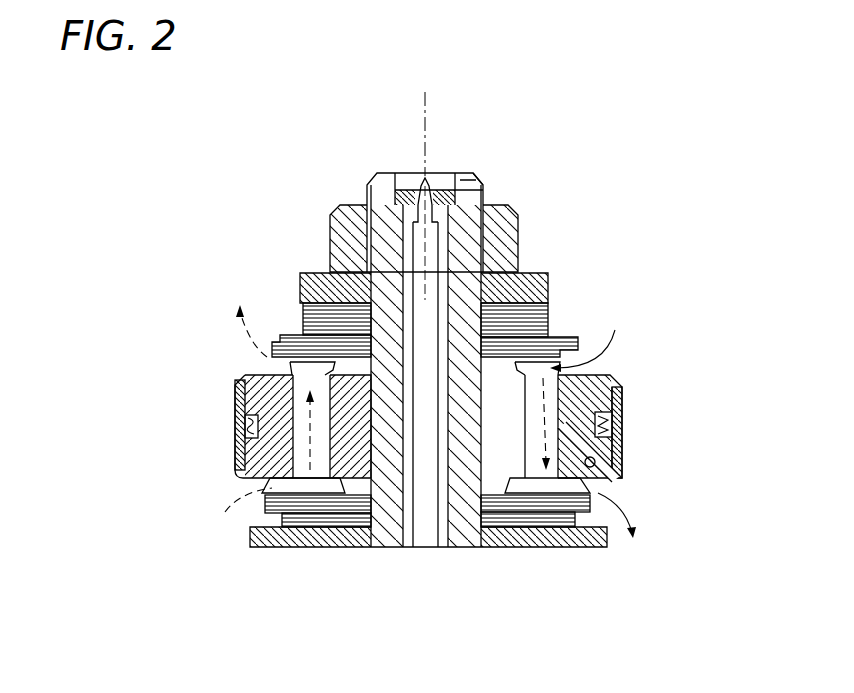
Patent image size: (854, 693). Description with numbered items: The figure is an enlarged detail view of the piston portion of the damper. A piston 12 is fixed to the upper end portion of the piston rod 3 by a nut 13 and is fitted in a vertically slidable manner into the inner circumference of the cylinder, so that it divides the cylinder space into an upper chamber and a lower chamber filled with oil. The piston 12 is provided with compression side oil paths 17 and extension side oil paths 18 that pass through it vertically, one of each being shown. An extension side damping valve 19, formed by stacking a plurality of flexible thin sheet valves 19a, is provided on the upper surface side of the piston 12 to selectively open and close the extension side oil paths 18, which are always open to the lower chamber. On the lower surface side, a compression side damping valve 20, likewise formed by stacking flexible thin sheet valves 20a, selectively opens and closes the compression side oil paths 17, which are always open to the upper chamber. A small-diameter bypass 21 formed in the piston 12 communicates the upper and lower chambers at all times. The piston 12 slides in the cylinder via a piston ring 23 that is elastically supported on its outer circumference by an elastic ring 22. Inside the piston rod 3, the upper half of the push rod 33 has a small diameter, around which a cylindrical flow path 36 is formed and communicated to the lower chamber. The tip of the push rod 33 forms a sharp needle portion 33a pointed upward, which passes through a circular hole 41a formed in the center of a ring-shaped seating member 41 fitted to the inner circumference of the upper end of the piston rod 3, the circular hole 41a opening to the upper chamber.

The piston rod 3 is at (362, 533).
The piston 12 is at (240, 376).
The nut 13 is at (328, 221).
The compression side oil path 17 is at (550, 410).
The extension side oil path 18 is at (237, 469).
The extension side damping valve 19 is at (297, 338).
The sheet valve 19a is at (558, 342).
The compression side damping valve 20 is at (583, 548).
The sheet valve 20a is at (262, 528).
The bypass 21 is at (612, 463).
The elastic ring 22 is at (612, 420).
The piston ring 23 is at (622, 428).
The push rod 33 is at (430, 548).
The needle portion 33a is at (428, 175).
The flow path 36 is at (483, 283).
The seating member 41 is at (410, 178).
The circular hole 41a is at (466, 174).